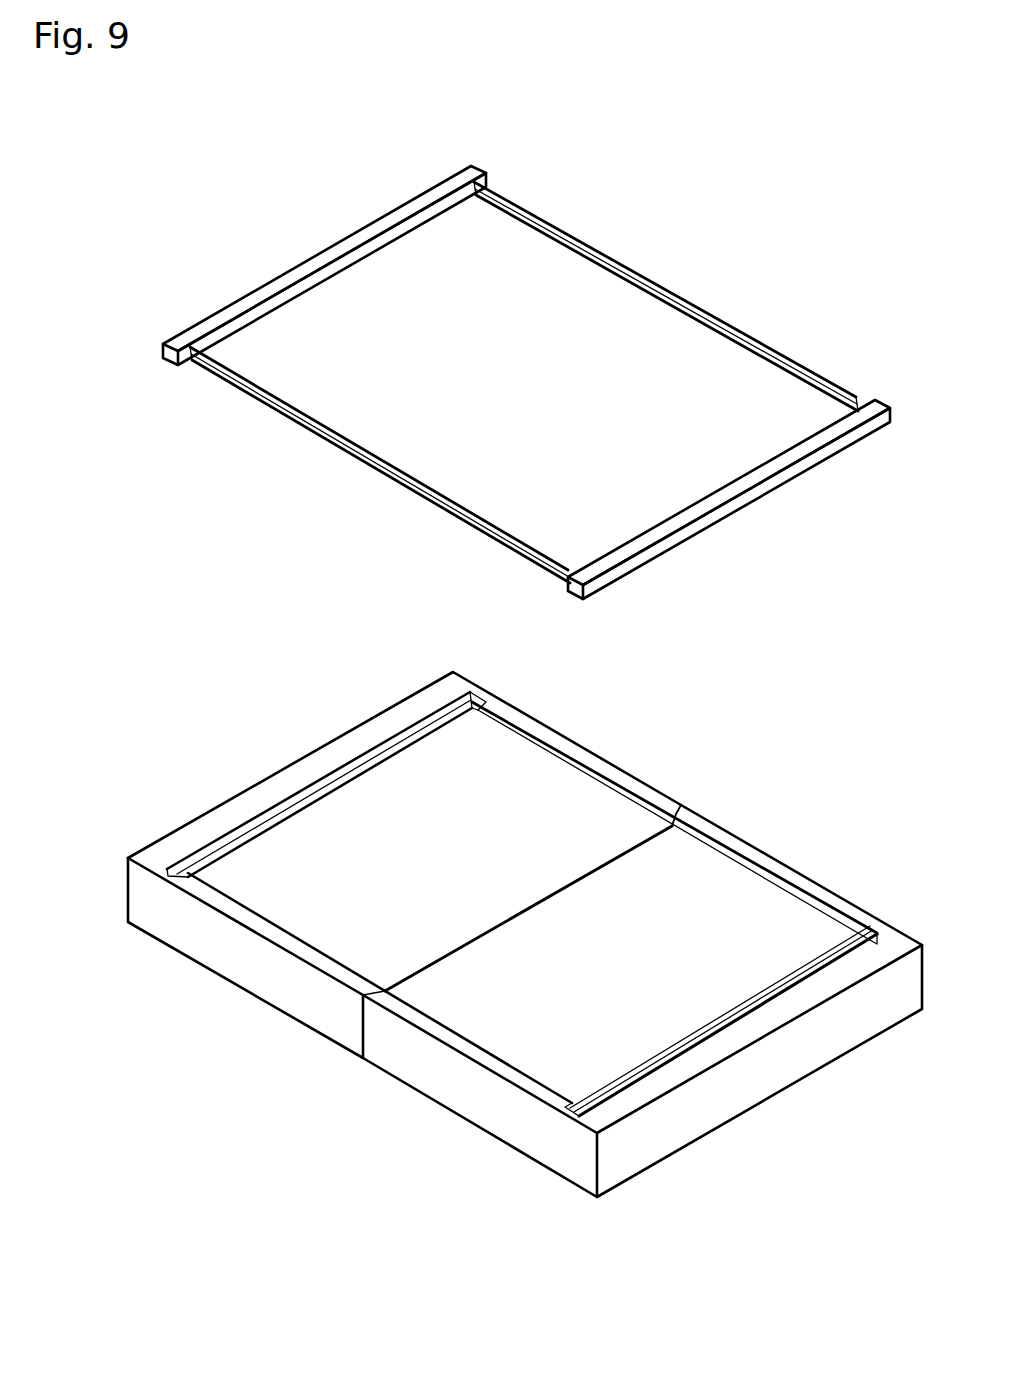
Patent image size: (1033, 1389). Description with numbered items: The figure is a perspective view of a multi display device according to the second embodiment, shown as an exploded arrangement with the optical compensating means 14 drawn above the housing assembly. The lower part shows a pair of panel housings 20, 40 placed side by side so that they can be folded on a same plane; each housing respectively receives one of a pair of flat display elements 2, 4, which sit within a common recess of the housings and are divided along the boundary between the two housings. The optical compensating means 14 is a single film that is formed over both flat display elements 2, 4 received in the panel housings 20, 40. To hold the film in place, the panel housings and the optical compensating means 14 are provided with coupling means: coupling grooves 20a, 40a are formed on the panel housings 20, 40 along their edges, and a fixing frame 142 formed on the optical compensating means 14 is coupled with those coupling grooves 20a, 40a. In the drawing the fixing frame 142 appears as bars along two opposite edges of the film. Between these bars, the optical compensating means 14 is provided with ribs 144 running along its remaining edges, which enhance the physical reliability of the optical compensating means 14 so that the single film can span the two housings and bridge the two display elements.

The flat display element 2 is at (387, 788).
The flat display element 4 is at (784, 904).
The optical compensating means 14 is at (702, 343).
The panel housing 20 is at (246, 952).
The coupling groove 20a is at (284, 819).
The panel housing 40 is at (451, 1070).
The coupling groove 40a is at (777, 988).
The fixing frame 142 is at (373, 234).
The rib 144 is at (257, 402).